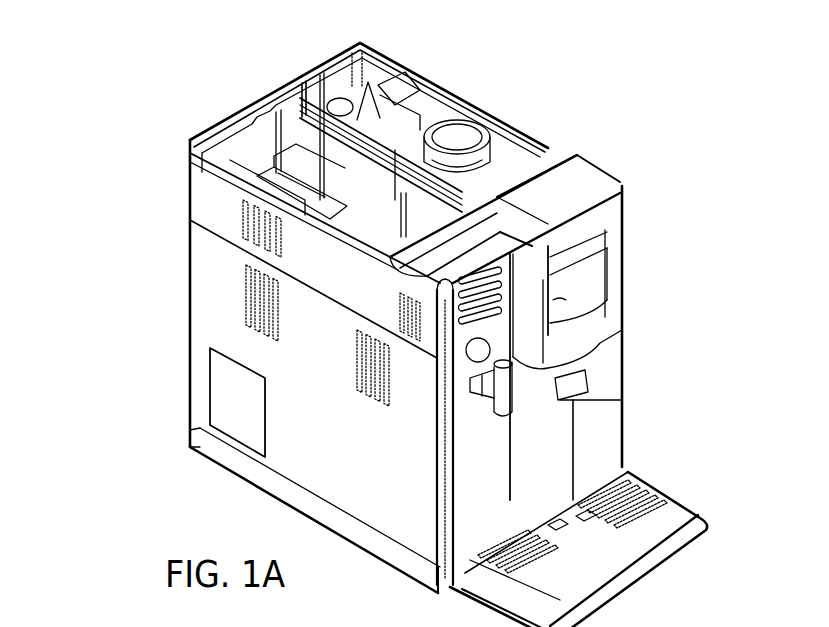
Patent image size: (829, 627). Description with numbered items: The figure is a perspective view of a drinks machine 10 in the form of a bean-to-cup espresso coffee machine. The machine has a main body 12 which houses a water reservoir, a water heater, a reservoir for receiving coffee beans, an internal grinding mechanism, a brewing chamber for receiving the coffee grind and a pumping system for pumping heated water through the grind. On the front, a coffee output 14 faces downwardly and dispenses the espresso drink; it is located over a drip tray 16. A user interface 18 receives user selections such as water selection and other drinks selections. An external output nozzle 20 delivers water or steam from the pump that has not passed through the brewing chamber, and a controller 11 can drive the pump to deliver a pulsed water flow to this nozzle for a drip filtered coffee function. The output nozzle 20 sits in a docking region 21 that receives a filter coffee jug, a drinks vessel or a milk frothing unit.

The drinks machine 10 is at (536, 84).
The controller 11 is at (213, 395).
The main body 12 is at (188, 328).
The coffee output 14 is at (618, 400).
The drip tray 16 is at (688, 512).
The user interface 18 is at (628, 225).
The output nozzle 20 is at (490, 393).
The docking region 21 is at (488, 470).